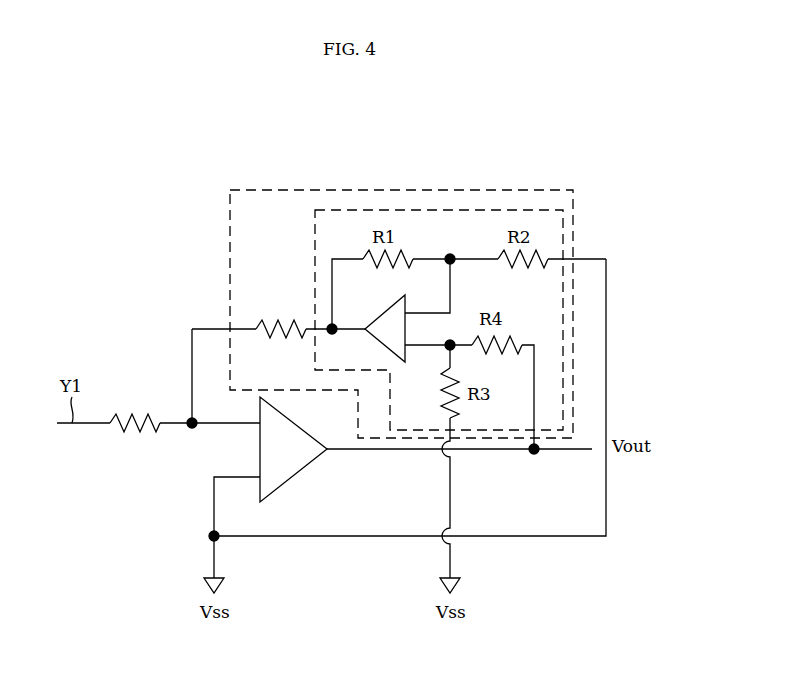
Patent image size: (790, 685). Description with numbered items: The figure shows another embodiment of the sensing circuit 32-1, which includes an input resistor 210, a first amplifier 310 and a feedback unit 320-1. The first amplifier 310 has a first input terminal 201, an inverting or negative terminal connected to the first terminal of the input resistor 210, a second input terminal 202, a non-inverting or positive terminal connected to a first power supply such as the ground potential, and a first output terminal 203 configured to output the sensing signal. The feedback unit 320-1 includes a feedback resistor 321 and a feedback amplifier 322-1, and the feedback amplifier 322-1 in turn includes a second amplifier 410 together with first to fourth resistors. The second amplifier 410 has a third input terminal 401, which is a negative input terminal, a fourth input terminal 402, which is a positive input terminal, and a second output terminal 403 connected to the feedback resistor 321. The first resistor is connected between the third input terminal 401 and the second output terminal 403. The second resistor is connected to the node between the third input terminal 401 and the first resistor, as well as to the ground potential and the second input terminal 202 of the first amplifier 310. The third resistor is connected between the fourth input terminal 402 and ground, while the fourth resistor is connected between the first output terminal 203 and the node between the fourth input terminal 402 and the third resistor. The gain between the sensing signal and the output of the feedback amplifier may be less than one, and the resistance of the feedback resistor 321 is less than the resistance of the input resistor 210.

The input resistor 210 is at (135, 433).
The first input terminal 201 is at (220, 427).
The second input terminal 202 is at (235, 481).
The first output terminal 203 is at (345, 453).
The first amplifier 310 is at (289, 416).
The feedback resistor 321 is at (268, 340).
The second output terminal 403 is at (350, 332).
The second amplifier 410 is at (389, 310).
The third input terminal 401 is at (428, 311).
The fourth input terminal 402 is at (420, 348).
The feedback unit 320-1 is at (573, 205).
The feedback amplifier 322-1 is at (563, 237).
The sensing circuit 32-1 is at (584, 186).